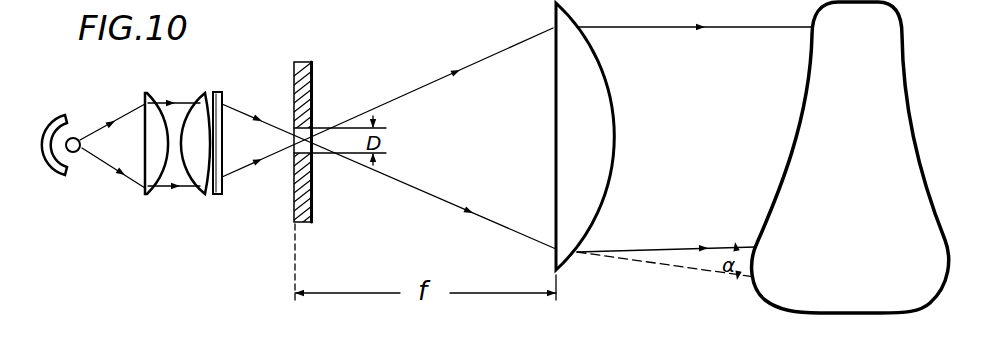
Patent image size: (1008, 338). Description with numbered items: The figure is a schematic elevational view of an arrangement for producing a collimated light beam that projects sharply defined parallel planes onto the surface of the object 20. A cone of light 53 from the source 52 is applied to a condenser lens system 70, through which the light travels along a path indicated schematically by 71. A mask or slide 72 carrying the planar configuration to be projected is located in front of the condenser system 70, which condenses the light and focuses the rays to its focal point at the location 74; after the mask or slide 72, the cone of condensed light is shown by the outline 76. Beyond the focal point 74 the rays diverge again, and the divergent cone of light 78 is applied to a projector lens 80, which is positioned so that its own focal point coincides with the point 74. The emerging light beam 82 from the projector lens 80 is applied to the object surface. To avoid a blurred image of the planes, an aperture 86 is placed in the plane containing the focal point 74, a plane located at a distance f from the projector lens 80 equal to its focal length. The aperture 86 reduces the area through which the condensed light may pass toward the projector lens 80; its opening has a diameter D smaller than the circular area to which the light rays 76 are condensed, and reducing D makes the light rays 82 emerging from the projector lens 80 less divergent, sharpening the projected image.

The object 20 is at (862, 208).
The source 52 is at (80, 137).
The cone of light 53 is at (109, 171).
The condenser lens system 70 is at (203, 65).
The light path 71 is at (167, 191).
The mask or slide 72 is at (220, 92).
The focal point 74 is at (293, 141).
The cone of condensed light 76 is at (244, 170).
The divergent cone of light 78 is at (442, 203).
The projector lens 80 is at (617, 146).
The emerging light beam 82 is at (679, 24).
The aperture 86 is at (306, 63).